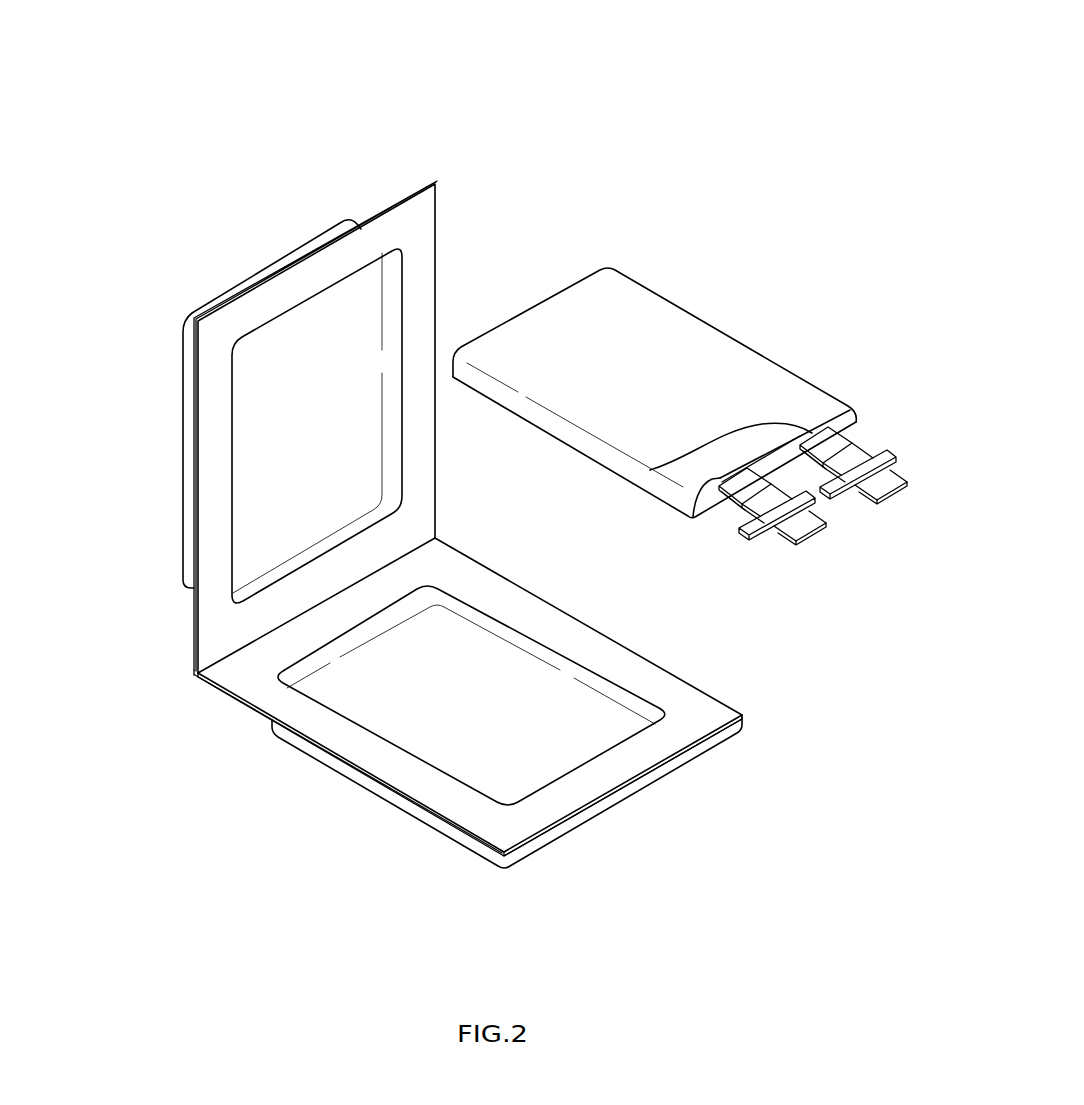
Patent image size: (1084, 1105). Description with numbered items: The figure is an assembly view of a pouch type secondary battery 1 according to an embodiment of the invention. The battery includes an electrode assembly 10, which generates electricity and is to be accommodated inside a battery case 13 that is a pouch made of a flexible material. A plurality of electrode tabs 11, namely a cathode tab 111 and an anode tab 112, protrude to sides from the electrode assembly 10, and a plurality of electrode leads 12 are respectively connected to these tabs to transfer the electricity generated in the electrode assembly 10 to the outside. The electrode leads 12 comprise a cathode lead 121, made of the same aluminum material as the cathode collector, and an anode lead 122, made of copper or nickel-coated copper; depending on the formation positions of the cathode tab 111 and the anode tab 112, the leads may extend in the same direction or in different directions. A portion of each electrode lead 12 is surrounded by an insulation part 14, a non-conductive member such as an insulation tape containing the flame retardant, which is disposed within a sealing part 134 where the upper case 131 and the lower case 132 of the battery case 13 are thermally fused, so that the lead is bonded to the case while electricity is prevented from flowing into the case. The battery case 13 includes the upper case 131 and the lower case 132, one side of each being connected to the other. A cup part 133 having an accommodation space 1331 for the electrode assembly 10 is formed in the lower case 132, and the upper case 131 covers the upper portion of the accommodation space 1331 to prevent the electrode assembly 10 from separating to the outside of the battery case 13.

The pouch type secondary battery 1 is at (608, 102).
The electrode assembly 10 is at (830, 287).
The electrode tabs 11 is at (578, 528).
The cathode tab 111 is at (660, 482).
The anode tab 112 is at (690, 490).
The electrode leads 12 is at (957, 545).
The cathode lead 121 is at (893, 488).
The anode lead 122 is at (808, 525).
The battery case 13 is at (103, 348).
The upper case 131 is at (190, 362).
The lower case 132 is at (217, 695).
The cup part 133 is at (383, 797).
The accommodation space 1331 is at (537, 773).
The sealing part 134 is at (700, 730).
The insulation part 14 is at (793, 502).